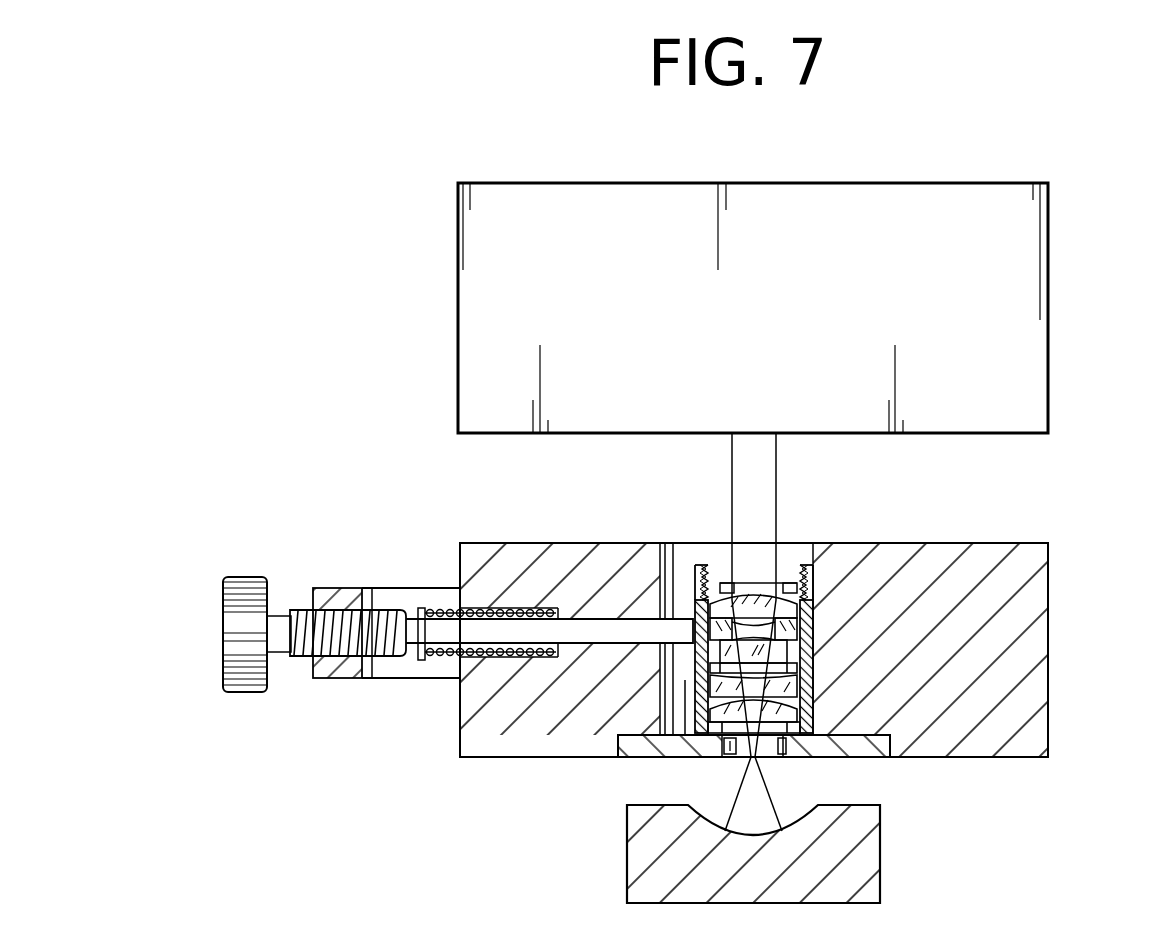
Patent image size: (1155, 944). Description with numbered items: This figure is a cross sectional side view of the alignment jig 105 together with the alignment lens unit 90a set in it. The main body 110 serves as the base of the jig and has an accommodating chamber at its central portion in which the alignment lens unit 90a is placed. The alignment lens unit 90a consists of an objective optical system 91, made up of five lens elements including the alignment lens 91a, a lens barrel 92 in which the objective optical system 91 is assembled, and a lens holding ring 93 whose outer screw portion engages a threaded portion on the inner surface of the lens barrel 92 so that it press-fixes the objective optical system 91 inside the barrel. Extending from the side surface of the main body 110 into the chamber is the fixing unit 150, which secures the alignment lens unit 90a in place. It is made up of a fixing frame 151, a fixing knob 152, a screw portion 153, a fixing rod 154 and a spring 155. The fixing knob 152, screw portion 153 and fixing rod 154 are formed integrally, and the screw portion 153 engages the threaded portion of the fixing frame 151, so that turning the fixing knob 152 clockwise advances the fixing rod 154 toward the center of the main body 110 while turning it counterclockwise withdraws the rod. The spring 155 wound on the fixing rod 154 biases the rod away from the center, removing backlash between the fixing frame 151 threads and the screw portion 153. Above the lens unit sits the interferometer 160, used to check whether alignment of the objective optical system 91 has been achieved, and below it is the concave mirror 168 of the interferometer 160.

The alignment jig 105 is at (357, 412).
The main body 110 is at (1025, 600).
The fixing unit 150 is at (385, 578).
The fixing frame 151 is at (400, 663).
The fixing knob 152 is at (238, 650).
The screw portion 153 is at (287, 655).
The fixing rod 154 is at (604, 630).
The spring 155 is at (443, 607).
The interferometer 160 is at (1003, 288).
The concave mirror 168 is at (863, 863).
The alignment lens unit 90a is at (693, 697).
The objective optical system 91 is at (771, 609).
The alignment lens 91a is at (812, 580).
The lens barrel 92 is at (790, 733).
The lens holding ring 93 is at (717, 577).